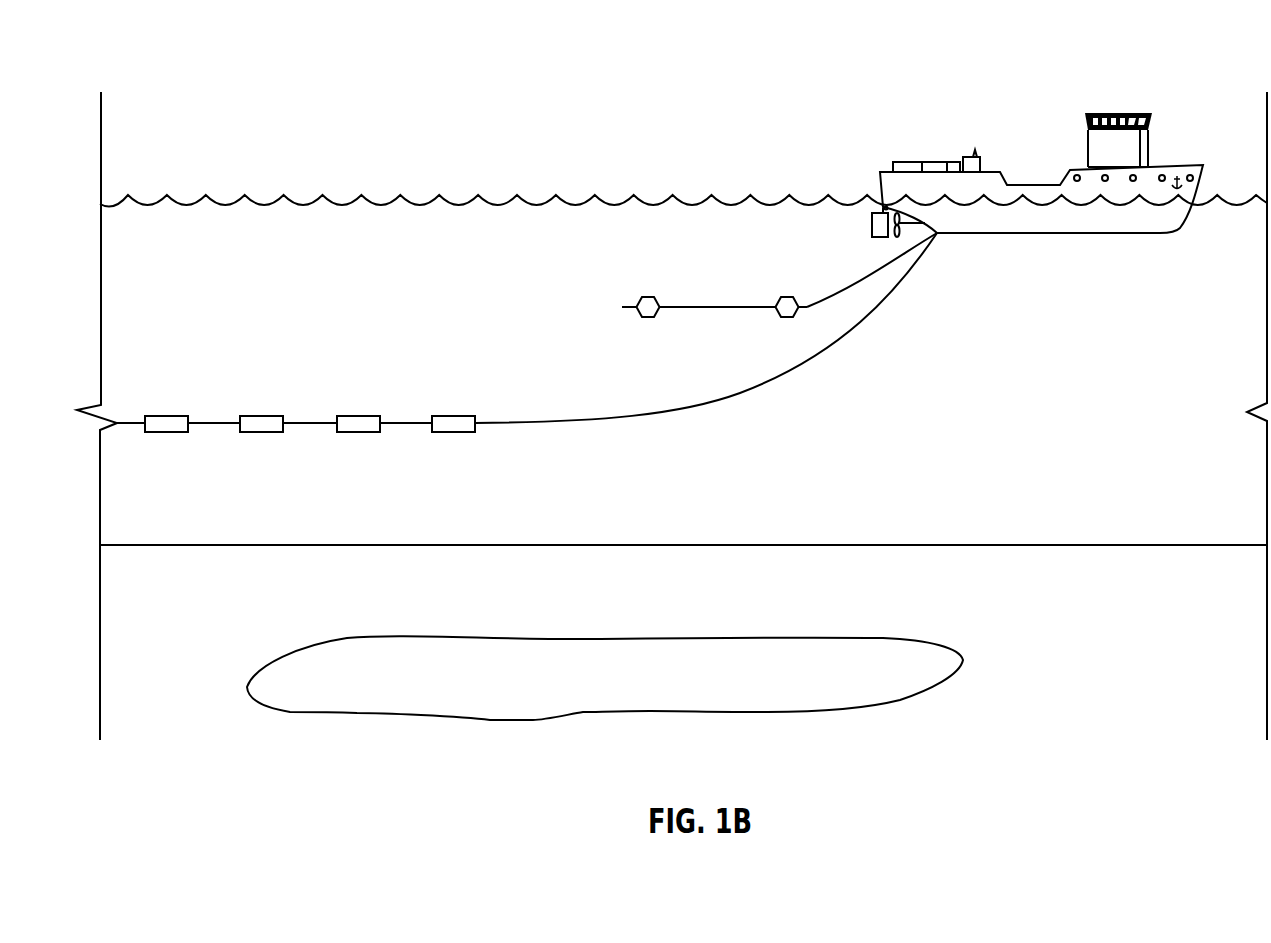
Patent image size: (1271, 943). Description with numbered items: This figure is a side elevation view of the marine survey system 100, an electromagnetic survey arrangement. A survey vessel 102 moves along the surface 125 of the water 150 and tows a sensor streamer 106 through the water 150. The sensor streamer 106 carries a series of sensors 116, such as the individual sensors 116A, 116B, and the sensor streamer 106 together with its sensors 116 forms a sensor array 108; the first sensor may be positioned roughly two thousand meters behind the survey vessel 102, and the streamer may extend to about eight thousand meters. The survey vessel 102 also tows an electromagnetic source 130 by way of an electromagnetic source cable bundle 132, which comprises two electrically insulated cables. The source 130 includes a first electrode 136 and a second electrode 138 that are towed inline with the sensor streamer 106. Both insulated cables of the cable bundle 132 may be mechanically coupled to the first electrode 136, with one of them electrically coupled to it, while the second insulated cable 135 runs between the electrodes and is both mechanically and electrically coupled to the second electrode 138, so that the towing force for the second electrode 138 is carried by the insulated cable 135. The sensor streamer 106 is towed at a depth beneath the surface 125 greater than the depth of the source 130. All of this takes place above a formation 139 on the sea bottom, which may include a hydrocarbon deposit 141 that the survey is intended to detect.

The marine survey system 100 is at (317, 72).
The survey vessel 102 is at (1128, 113).
The sensor streamer 106 is at (727, 397).
The sensor array 108 is at (300, 355).
The sensors 116 is at (165, 416).
The sensor 116A is at (447, 432).
The sensor 116B is at (360, 416).
The surface of the water 125 is at (418, 205).
The electromagnetic source 130 is at (715, 273).
The electromagnetic source cable bundle 132 is at (862, 283).
The second insulated cable 135 is at (700, 308).
The first electrode 136 is at (785, 317).
The second electrode 138 is at (638, 306).
The formation 139 is at (1015, 606).
The hydrocarbon deposit 141 is at (388, 691).
The water 150 is at (1015, 428).